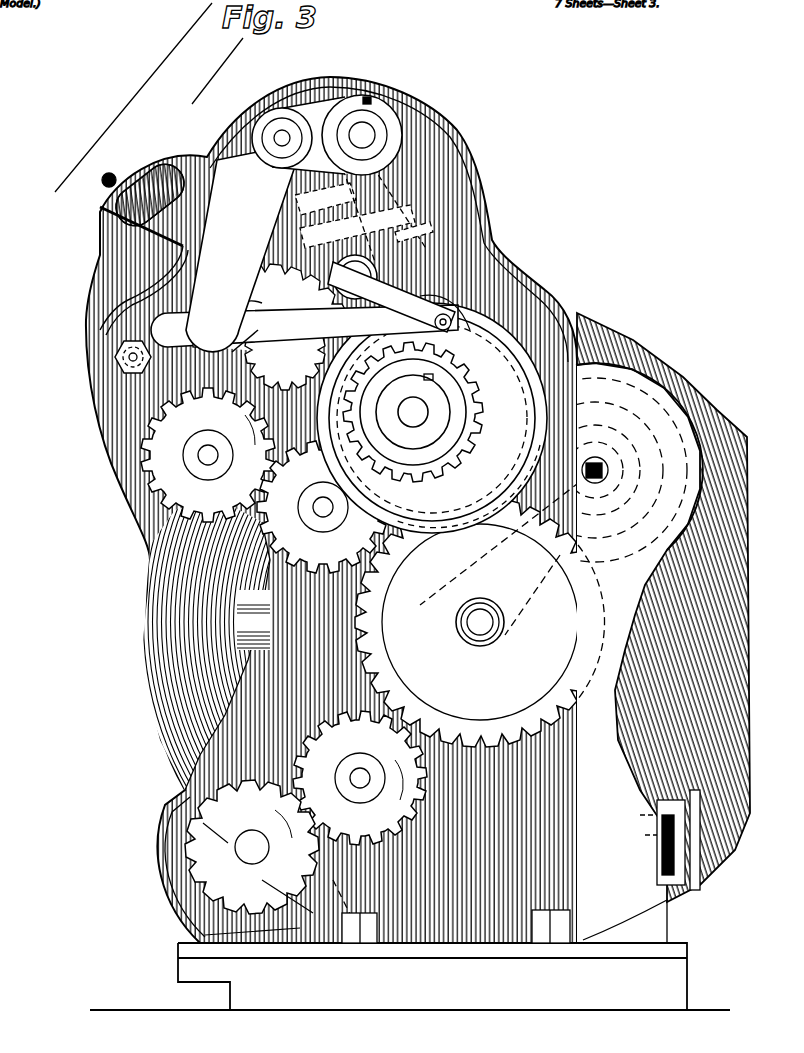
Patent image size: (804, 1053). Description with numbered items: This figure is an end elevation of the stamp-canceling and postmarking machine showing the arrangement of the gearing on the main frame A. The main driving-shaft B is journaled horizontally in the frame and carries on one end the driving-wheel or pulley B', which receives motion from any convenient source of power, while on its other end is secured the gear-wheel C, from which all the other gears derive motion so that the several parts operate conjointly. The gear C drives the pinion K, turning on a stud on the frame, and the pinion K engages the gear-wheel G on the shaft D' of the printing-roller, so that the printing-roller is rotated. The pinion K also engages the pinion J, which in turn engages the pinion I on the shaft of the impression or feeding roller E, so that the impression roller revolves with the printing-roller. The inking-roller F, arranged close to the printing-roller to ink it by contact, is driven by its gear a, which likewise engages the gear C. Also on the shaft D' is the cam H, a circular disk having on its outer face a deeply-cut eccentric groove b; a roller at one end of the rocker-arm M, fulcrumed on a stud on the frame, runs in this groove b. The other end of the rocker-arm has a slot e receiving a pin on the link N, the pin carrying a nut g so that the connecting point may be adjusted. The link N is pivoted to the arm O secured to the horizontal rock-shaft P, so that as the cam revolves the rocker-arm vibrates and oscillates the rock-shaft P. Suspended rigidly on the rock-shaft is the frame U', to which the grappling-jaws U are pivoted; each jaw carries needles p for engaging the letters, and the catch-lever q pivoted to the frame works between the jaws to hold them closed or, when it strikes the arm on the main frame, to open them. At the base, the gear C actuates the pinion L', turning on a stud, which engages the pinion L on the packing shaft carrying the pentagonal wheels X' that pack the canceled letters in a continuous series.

The arm O is at (322, 122).
The rock-shaft P is at (362, 135).
The catch-lever q is at (392, 208).
The needles p is at (433, 239).
The link N is at (222, 225).
The grappling-jaws U is at (325, 199).
The frame U' is at (357, 228).
The gear-wheel C is at (469, 501).
The rocker-arm M is at (378, 290).
The cam H is at (500, 352).
The inking-roller F is at (232, 305).
The slot e is at (275, 327).
The nut g is at (262, 337).
The pinion I is at (306, 334).
The impression or feeding roller E is at (226, 350).
The shaft D' is at (413, 412).
The gear-wheel G is at (470, 445).
The cam-groove b is at (466, 472).
The gear a is at (585, 470).
The pinion J is at (213, 457).
The pinion K is at (331, 546).
The main driving-shaft B is at (480, 645).
The driving-wheel or pulley B' is at (461, 622).
The pinion L' is at (360, 778).
The pentagonal wheels X' is at (226, 872).
The pinion L is at (252, 847).
The main frame A is at (550, 888).